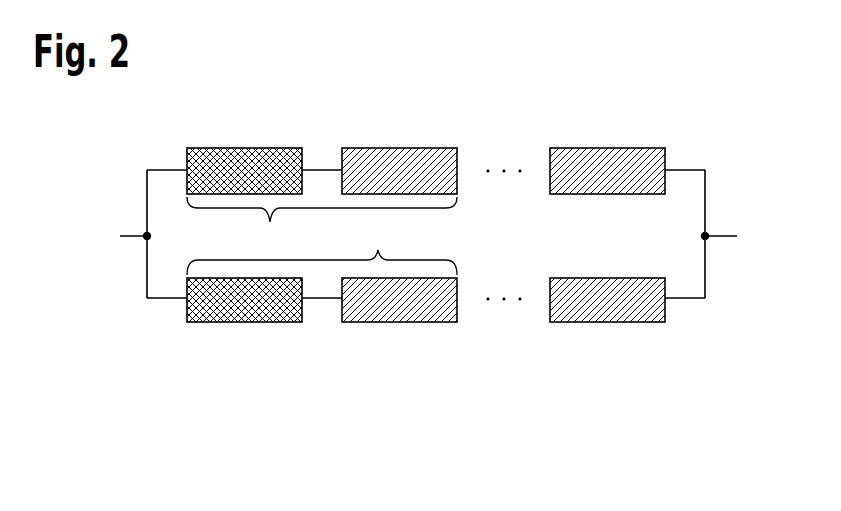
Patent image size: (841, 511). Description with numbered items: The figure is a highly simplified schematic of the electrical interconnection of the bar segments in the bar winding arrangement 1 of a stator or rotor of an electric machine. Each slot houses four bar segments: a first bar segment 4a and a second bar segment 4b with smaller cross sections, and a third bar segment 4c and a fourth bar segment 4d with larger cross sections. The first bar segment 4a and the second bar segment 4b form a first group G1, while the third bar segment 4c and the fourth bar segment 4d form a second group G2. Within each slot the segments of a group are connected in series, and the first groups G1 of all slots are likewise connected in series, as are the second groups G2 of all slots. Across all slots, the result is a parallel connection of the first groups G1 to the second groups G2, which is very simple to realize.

The bar winding arrangement 1 is at (306, 415).
The first bar segment 4a is at (232, 316).
The second bar segment 4b is at (403, 312).
The third bar segment 4c is at (247, 158).
The fourth bar segment 4d is at (390, 158).
The first group G1 is at (322, 246).
The second group G2 is at (322, 227).